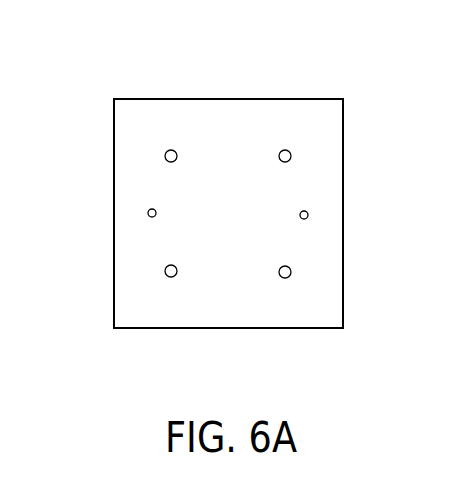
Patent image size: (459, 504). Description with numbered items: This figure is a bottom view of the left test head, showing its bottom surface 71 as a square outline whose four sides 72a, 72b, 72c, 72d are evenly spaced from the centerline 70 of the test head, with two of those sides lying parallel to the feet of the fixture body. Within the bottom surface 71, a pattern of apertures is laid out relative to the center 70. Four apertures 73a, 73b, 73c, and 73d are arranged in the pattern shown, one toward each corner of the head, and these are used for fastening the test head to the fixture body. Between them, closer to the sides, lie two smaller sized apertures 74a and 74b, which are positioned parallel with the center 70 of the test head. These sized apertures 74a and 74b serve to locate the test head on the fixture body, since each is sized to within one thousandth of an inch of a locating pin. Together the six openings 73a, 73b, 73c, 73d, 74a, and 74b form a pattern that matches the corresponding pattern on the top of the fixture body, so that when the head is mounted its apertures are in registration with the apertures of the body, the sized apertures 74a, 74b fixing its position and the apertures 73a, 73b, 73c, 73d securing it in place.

The centerline 70 is at (228, 215).
The bottom surface 71 is at (272, 135).
The side 72a is at (113, 213).
The side 72b is at (227, 98).
The side 72c is at (345, 213).
The side 72d is at (226, 330).
The aperture 73a is at (163, 152).
The aperture 73b is at (292, 152).
The aperture 73c is at (163, 276).
The aperture 73d is at (295, 278).
The sized aperture 74a is at (145, 218).
The sized aperture 74b is at (313, 222).